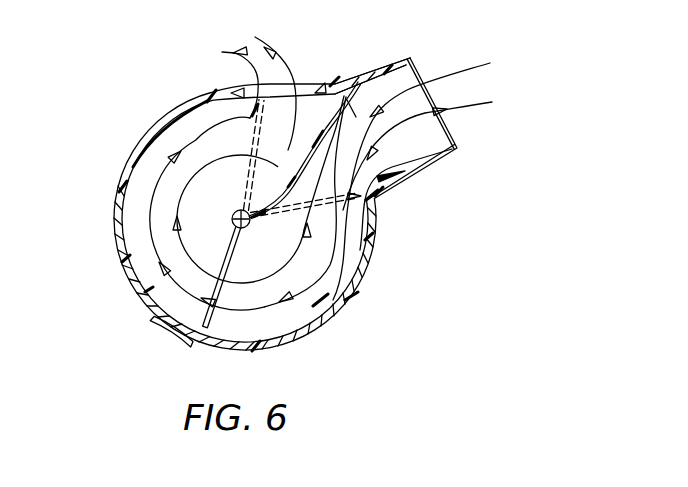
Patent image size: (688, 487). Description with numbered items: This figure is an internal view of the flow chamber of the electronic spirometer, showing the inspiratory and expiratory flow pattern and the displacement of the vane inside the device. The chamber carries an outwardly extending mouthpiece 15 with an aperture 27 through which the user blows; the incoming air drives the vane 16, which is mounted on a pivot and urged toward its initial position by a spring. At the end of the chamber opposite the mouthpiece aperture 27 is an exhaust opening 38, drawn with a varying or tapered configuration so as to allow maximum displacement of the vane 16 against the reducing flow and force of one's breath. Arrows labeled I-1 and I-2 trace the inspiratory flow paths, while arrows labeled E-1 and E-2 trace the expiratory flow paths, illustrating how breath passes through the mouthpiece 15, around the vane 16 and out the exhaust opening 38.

The mouthpiece 15 is at (363, 78).
The vane 16 is at (222, 302).
The aperture 27 is at (426, 96).
The exhaust opening 38 is at (250, 91).
The exhaust flow path 1 E-1 is at (128, 155).
The exhaust flow path 2 E-2 is at (140, 202).
The inlet flow path 1 I-1 is at (369, 250).
The inlet flow path 2 I-2 is at (305, 271).